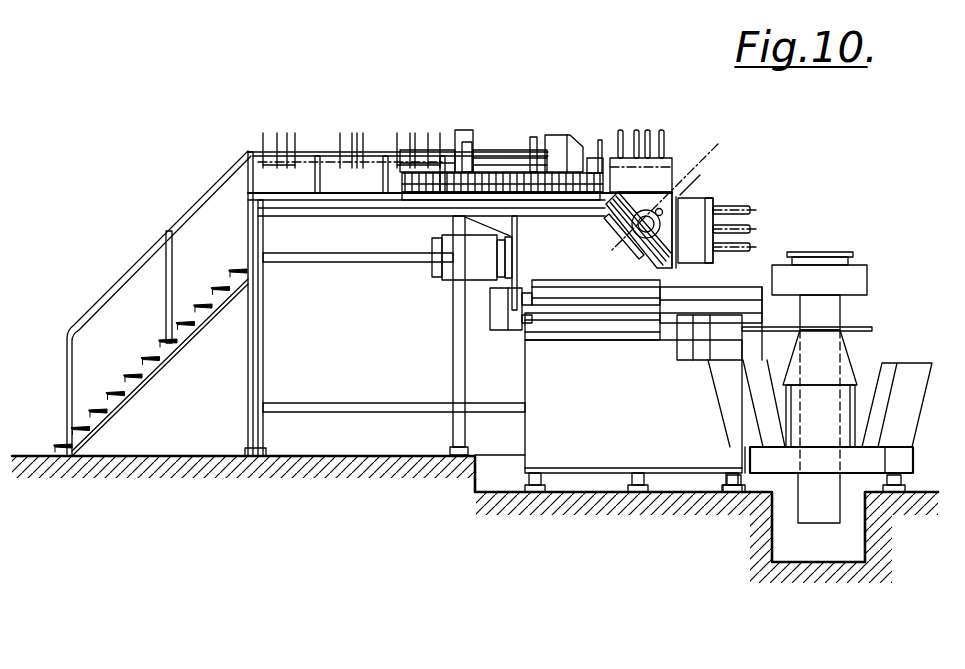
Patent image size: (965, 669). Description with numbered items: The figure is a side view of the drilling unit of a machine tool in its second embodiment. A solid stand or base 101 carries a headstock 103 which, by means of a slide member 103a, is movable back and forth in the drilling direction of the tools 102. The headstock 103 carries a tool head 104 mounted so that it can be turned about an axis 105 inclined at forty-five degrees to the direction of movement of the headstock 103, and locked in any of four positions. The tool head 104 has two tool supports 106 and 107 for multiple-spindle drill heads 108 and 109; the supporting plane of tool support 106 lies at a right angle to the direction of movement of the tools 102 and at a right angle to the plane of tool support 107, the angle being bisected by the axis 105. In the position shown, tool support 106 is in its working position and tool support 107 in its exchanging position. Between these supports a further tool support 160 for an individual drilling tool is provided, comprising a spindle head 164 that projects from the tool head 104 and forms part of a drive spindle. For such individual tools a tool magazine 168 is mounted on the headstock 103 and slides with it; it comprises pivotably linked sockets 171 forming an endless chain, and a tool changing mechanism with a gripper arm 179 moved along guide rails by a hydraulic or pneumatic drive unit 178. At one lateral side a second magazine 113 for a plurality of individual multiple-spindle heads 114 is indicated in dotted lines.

The stand or base 101 is at (641, 421).
The tools 102 is at (725, 208).
The headstock 103 is at (548, 265).
The slide member 103a is at (587, 290).
The tool head 104 is at (668, 220).
The axis 105 is at (697, 176).
The tool support 106 is at (676, 262).
The tool support 107 is at (648, 190).
The multiple-spindle drill head 108 is at (700, 193).
The multiple-spindle drill head 109 is at (622, 170).
The second magazine 113 is at (358, 149).
The multiple-spindle heads 114 is at (328, 160).
The tool support 160 is at (629, 254).
The spindle head 164 is at (606, 230).
The tool magazine 168 is at (526, 144).
The sockets 171 is at (442, 182).
The hydraulic or pneumatic drive unit 178 is at (500, 163).
The gripper arm 179 is at (585, 122).